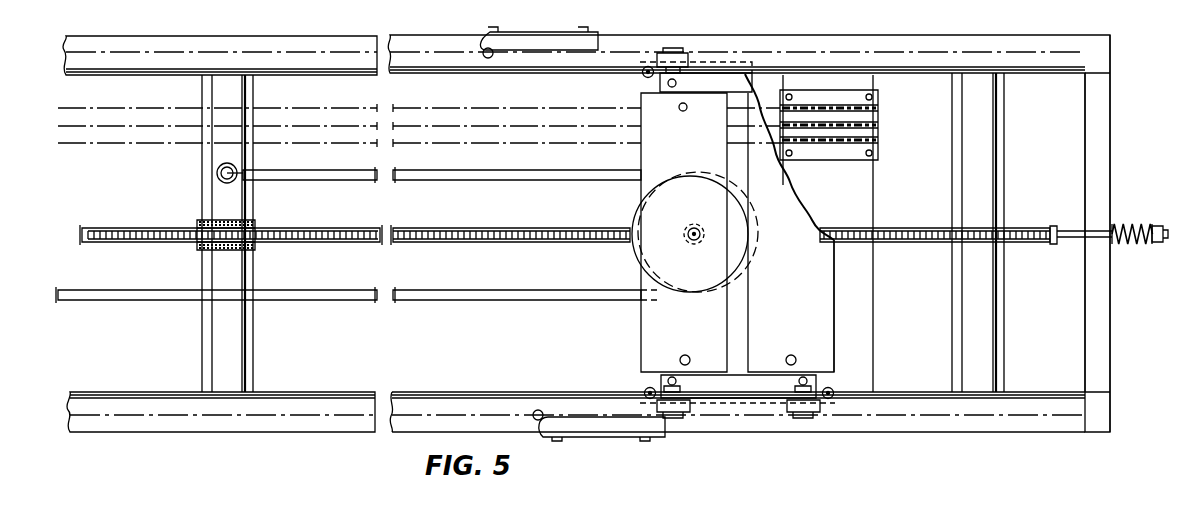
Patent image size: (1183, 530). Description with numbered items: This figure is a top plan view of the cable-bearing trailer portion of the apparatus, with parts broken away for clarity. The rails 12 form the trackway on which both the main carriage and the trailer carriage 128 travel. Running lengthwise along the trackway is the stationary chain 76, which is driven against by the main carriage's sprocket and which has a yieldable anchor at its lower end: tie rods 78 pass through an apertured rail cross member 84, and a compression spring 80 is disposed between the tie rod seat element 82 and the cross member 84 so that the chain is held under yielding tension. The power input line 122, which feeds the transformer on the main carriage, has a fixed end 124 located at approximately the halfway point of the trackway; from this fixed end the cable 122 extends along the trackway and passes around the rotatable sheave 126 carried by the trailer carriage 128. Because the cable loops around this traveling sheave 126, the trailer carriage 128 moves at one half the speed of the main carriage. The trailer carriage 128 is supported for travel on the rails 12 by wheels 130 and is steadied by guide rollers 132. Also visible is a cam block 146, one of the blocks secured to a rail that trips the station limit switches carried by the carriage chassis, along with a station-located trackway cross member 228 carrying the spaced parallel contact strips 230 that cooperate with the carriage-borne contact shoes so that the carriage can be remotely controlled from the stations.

The rails 12 is at (266, 36).
The stationary chain 76 is at (352, 218).
The tie rods 78 is at (1070, 240).
The compression spring 80 is at (1147, 224).
The tie rod seat element 82 is at (1158, 243).
The apertured rail cross member 84 is at (1112, 166).
The power input line 122 is at (483, 181).
The fixed end 124 is at (233, 170).
The rotatable sheave 126 is at (630, 250).
The trailer carriage 128 is at (828, 298).
The wheels 130 is at (690, 52).
The guide rollers 132 is at (651, 79).
The cam blocks 146 is at (550, 43).
The trackway cross members 228 is at (868, 343).
The contact strips 230 is at (880, 140).